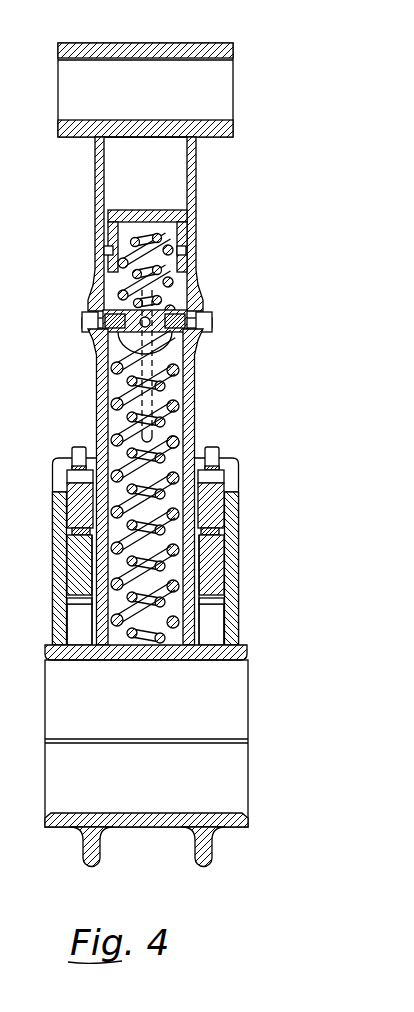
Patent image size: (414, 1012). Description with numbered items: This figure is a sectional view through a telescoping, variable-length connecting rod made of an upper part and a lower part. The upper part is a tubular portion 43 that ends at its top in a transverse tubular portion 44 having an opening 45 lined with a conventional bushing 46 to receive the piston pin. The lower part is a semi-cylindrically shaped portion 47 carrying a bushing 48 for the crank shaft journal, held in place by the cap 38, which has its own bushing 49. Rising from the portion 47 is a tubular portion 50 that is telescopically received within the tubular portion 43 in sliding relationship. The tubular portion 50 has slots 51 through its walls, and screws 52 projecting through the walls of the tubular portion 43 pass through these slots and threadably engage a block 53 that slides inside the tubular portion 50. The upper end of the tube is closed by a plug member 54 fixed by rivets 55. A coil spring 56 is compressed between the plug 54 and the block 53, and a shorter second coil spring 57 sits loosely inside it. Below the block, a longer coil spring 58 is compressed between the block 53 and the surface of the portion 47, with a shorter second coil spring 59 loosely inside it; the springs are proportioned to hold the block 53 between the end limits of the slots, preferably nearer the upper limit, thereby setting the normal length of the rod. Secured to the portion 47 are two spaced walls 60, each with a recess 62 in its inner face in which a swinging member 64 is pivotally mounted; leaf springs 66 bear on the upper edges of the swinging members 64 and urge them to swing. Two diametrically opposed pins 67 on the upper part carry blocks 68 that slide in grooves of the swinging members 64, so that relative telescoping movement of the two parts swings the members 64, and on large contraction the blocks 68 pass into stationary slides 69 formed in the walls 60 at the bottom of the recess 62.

The cap 38 is at (210, 837).
The tubular portion 43 is at (193, 178).
The transverse tubular portion 44 is at (123, 44).
The opening 45 is at (183, 53).
The bushing 46 is at (220, 60).
The semi-cylindrically shaped portion 47 is at (242, 653).
The bushing 48 is at (243, 670).
The bushing 49 is at (238, 815).
The tubular portion 50 is at (192, 623).
The slots 51 is at (108, 392).
The screws 52 is at (82, 325).
The block 53 is at (122, 340).
The plug member 54 is at (177, 213).
The rivets 55 is at (186, 250).
The coil spring 56 is at (175, 288).
The second coil spring 57 is at (137, 278).
The coil spring 58 is at (183, 437).
The second coil spring 59 is at (157, 424).
The walls 60 is at (82, 625).
The recess 62 is at (82, 601).
The swinging member 64 is at (75, 563).
The leaf springs 66 is at (83, 437).
The pins 67 is at (75, 510).
The blocks 68 is at (80, 530).
The stationary slides 69 is at (78, 637).